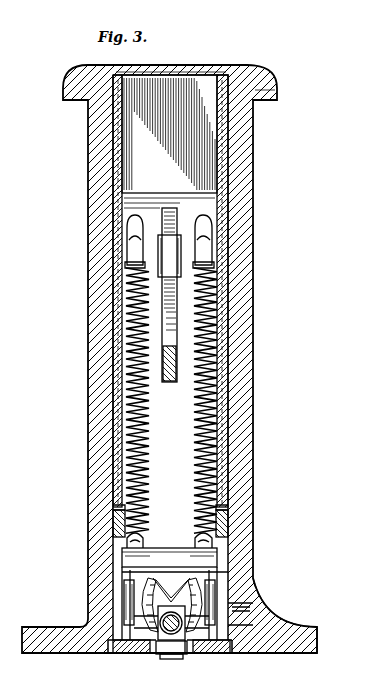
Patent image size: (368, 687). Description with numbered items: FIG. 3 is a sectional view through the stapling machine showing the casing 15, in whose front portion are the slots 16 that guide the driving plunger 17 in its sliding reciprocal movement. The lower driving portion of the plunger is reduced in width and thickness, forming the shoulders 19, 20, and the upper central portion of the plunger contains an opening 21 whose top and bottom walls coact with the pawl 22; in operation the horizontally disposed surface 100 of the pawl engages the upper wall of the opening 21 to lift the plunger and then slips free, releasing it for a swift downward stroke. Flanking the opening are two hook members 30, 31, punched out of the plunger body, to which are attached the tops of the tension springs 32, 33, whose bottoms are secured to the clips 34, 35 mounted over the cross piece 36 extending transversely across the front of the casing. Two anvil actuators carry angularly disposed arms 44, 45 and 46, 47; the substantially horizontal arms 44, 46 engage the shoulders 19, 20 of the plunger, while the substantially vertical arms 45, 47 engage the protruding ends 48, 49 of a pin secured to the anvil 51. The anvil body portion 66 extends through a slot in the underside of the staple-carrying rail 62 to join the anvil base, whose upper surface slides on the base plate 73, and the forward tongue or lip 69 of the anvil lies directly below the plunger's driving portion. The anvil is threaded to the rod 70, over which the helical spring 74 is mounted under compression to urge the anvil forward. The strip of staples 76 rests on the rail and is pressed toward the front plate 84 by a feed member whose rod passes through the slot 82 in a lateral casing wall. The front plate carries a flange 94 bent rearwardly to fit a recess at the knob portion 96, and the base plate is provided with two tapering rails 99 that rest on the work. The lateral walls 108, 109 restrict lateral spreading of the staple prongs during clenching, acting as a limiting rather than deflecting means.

The casing 15 is at (256, 340).
The slots 16 is at (229, 288).
The driving plunger 17 is at (210, 205).
The shoulder 19 is at (118, 507).
The shoulder 20 is at (228, 507).
The opening 21 is at (160, 268).
The pawl 22 is at (166, 323).
The hook member 30 is at (135, 250).
The hook member 31 is at (205, 245).
The tension spring 32 is at (128, 437).
The tension spring 33 is at (205, 400).
The clip 34 is at (128, 540).
The clip 35 is at (225, 540).
The cross piece 36 is at (230, 557).
The arm 44 is at (120, 517).
The arm 45 is at (130, 598).
The arm 46 is at (230, 517).
The arm 47 is at (255, 622).
The protruding end of pin 48 is at (130, 605).
The protruding end of pin 49 is at (280, 652).
The anvil 51 is at (190, 652).
The staple-carrying member or rail 62 is at (145, 572).
The body portion of anvil 66 is at (205, 642).
The tongue or lip 69 is at (172, 658).
The rod 70 is at (130, 640).
The base plate 73 is at (110, 645).
The helical spring 74 is at (160, 630).
The strip of staples 76 is at (228, 577).
The slot 82 is at (240, 600).
The front plate 84 is at (208, 133).
The flange 94 is at (212, 68).
The knob portion 96 is at (268, 92).
The rails or props 99 is at (245, 642).
The horizontally disposed surface of pawl 100 is at (115, 218).
The lateral wall 108 is at (75, 652).
The lateral wall 109 is at (317, 640).